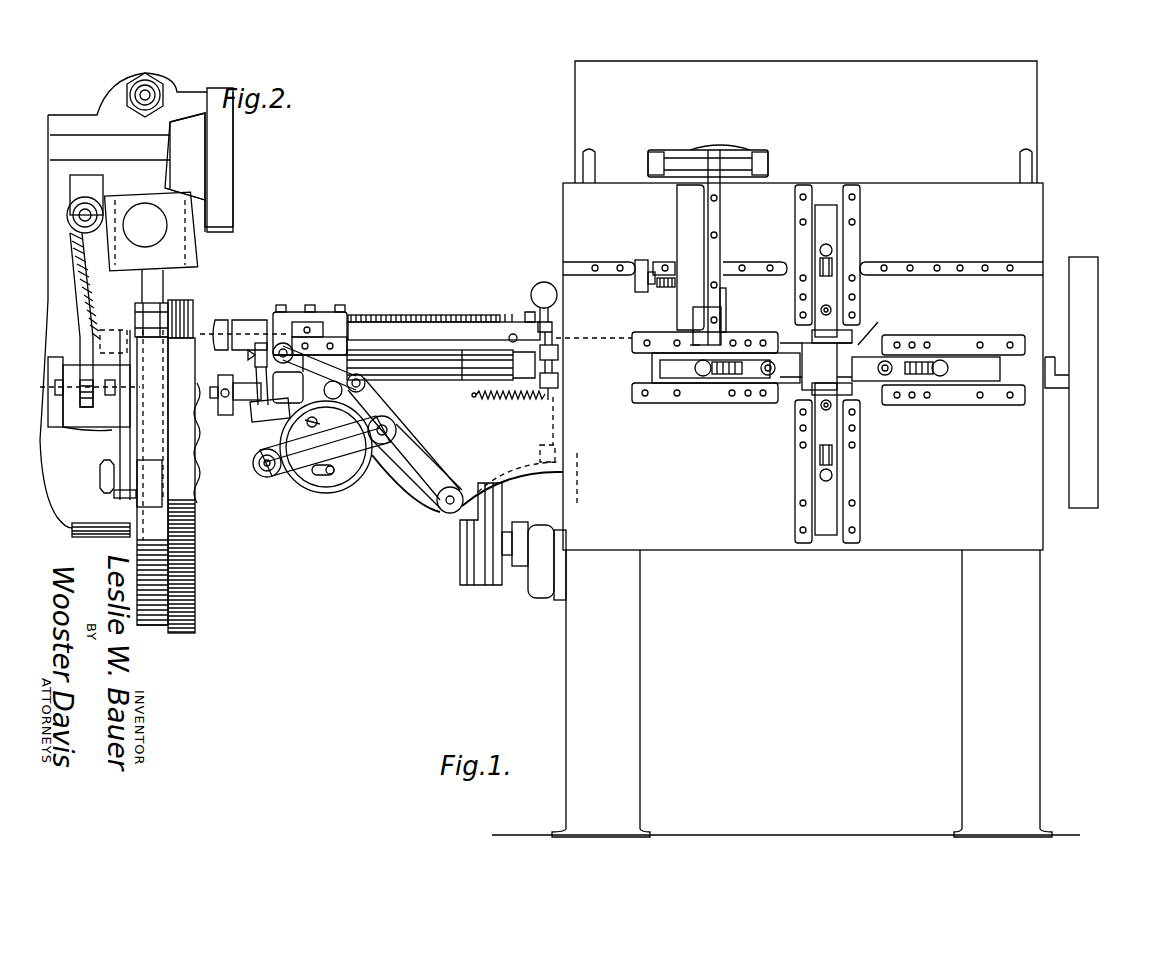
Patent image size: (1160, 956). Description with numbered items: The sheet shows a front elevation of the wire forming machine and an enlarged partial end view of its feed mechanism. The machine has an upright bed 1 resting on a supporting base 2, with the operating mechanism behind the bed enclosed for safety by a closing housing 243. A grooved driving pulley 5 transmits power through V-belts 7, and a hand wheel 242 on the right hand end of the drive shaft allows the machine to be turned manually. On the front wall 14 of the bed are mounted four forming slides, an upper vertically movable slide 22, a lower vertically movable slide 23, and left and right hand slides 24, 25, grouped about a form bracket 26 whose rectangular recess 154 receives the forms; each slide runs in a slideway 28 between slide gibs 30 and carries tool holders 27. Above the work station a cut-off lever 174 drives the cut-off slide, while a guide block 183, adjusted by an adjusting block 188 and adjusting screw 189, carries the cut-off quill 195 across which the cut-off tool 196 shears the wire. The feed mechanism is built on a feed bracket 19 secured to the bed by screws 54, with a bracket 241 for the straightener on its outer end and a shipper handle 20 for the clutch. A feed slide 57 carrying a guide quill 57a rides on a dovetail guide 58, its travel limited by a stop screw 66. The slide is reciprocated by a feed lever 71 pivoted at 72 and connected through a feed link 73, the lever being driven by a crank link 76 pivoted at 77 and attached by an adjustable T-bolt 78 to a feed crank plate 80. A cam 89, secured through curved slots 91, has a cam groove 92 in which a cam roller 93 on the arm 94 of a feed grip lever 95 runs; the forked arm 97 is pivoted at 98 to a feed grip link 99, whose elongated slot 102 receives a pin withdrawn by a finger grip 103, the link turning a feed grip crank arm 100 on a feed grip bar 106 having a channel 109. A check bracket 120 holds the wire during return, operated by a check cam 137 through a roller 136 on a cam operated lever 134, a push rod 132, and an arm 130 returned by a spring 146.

In FIG. 1, the bed 1 is at (786, 449).
In FIG. 2, the supporting base 2 is at (565, 655).
In FIG. 2, the grooved driving pulley 5 is at (460, 566).
In FIG. 2, the V-belts 7 is at (492, 512).
In FIG. 1, the front wall 14 is at (740, 548).
In FIG. 2, the feed bracket 19 is at (512, 474).
In FIG. 2, the shipper handle 20 is at (533, 287).
In FIG. 1, the upper vertically movable slide 22 is at (842, 234).
In FIG. 1, the lower vertically movable slide 23 is at (840, 490).
In FIG. 1, the left hand slide 24 is at (670, 372).
In FIG. 1, the right hand slide 25 is at (926, 369).
In FIG. 1, the form bracket 26 is at (872, 340).
In FIG. 1, the tool holders 27 is at (815, 305).
In FIG. 1, the slideway 28 is at (868, 252).
In FIG. 1, the slide gibs 30 is at (800, 245).
In FIG. 2, the screws 54 is at (540, 452).
In FIG. 2, the feed slide 57 is at (237, 205).
In FIG. 2, the guide quill 57a is at (290, 330).
In FIG. 2, the dovetail guide 58 is at (205, 165).
In FIG. 2, the stop screw 66 is at (442, 318).
In FIG. 2, the feed lever 71 is at (412, 452).
In FIG. 2, the pivot 72 is at (442, 513).
In FIG. 2, the feed link 73 is at (320, 370).
In FIG. 2, the crank link 76 is at (280, 462).
In FIG. 2, the pivot 77 is at (392, 426).
In FIG. 2, the T-bolt 78 is at (258, 474).
In FIG. 2, the feed crank plate 80 is at (318, 478).
In FIG. 2, the cam 89 is at (152, 626).
In FIG. 2, the elongated curved slots 91 is at (316, 425).
In FIG. 2, the cam groove 92 is at (135, 538).
In FIG. 2, the cam roller 93 is at (142, 462).
In FIG. 2, the arm 94 is at (118, 470).
In FIG. 2, the feed grip lever 95 is at (100, 432).
In FIG. 2, the forked arm 97 is at (72, 427).
In FIG. 2, the pivot 98 is at (116, 386).
In FIG. 2, the feed grip link 99 is at (78, 320).
In FIG. 2, the feed grip crank arm 100 is at (132, 196).
In FIG. 2, the elongated slot 102 is at (88, 196).
In FIG. 2, the finger grip 103 is at (75, 230).
In FIG. 2, the feed grip bar 106 is at (432, 388).
In FIG. 2, the channel 109 is at (396, 362).
In FIG. 2, the check bracket 120 is at (558, 352).
In FIG. 2, the arm 130 is at (558, 380).
In FIG. 2, the push rod 132 is at (468, 385).
In FIG. 2, the cam operated lever 134 is at (165, 300).
In FIG. 2, the roller 136 is at (182, 305).
In FIG. 2, the check cam 137 is at (182, 590).
In FIG. 2, the spring 146 is at (510, 400).
In FIG. 1, the rectangular recess 154 is at (818, 348).
In FIG. 1, the cut-off lever 174 is at (700, 152).
In FIG. 1, the guide block 183 is at (680, 227).
In FIG. 1, the adjusting block 188 is at (641, 284).
In FIG. 1, the adjusting screw 189 is at (663, 292).
In FIG. 1, the cut-off quill 195 is at (700, 342).
In FIG. 1, the cut-off tool 196 is at (728, 322).
In FIG. 2, the bracket 241 is at (240, 330).
In FIG. 1, the hand wheel 242 is at (1090, 490).
In FIG. 1, the closing housing 243 is at (577, 107).